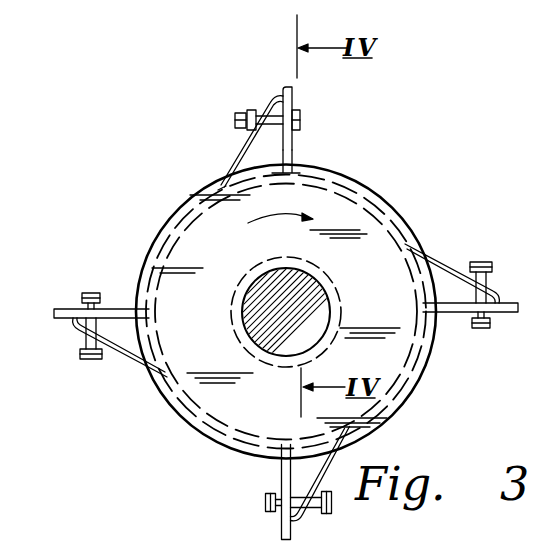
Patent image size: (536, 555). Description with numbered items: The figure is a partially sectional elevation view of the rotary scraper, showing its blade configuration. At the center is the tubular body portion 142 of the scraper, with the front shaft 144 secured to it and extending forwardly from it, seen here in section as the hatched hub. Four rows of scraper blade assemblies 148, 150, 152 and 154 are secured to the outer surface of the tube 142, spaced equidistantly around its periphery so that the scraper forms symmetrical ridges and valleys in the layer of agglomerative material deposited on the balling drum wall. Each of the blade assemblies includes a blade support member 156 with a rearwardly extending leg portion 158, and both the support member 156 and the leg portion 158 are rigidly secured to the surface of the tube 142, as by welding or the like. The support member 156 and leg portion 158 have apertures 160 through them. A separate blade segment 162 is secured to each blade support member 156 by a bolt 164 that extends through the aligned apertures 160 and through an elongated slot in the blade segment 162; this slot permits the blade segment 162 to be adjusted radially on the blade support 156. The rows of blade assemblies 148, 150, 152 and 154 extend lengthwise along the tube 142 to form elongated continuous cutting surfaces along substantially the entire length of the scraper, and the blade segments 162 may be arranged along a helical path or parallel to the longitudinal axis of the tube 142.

The tubular body portion 142 is at (386, 209).
The front shaft 144 is at (311, 289).
The scraper blade assembly 148 is at (294, 98).
The scraper blade assembly 150 is at (127, 363).
The scraper blade assembly 152 is at (277, 486).
The scraper blade assembly 154 is at (460, 320).
The blade support member 156 is at (287, 160).
The rearwardly extending leg portion 158 is at (232, 164).
The aperture 160 is at (254, 109).
The blade segment 162 is at (293, 138).
The bolt 164 is at (235, 121).